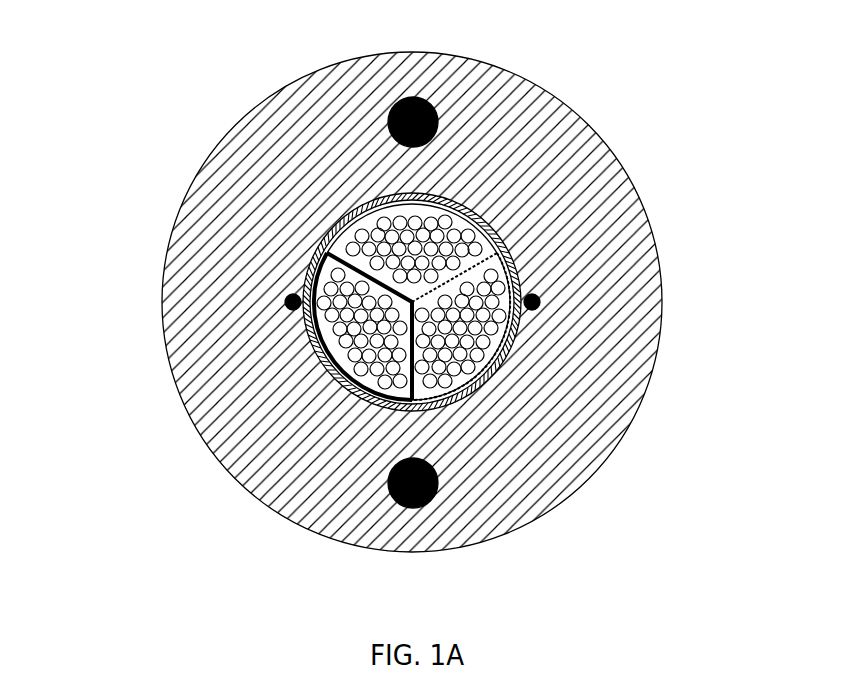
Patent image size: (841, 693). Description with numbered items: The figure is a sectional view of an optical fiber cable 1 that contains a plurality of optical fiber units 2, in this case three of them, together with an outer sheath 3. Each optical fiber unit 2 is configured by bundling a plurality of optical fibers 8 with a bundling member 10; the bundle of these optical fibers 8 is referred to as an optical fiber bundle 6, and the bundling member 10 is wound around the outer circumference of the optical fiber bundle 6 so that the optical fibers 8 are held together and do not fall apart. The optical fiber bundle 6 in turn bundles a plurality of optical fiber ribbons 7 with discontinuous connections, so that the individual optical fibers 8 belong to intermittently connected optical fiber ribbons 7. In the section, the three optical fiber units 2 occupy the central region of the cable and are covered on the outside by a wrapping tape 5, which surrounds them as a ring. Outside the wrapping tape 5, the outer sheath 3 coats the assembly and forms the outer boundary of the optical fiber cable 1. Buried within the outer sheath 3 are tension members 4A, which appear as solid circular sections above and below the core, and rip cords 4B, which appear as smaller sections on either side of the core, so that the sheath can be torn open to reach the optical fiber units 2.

The optical fiber cable 1 is at (630, 96).
The optical fiber unit 2 is at (152, 60).
The outer sheath 3 is at (617, 180).
The tension member 4A is at (421, 100).
The rip cord 4B is at (290, 300).
The wrapping tape 5 is at (520, 276).
The optical fiber bundle 6 is at (677, 443).
The optical fiber ribbon 7 is at (363, 326).
The optical fiber 8 is at (461, 326).
The bundling member 10 is at (343, 215).